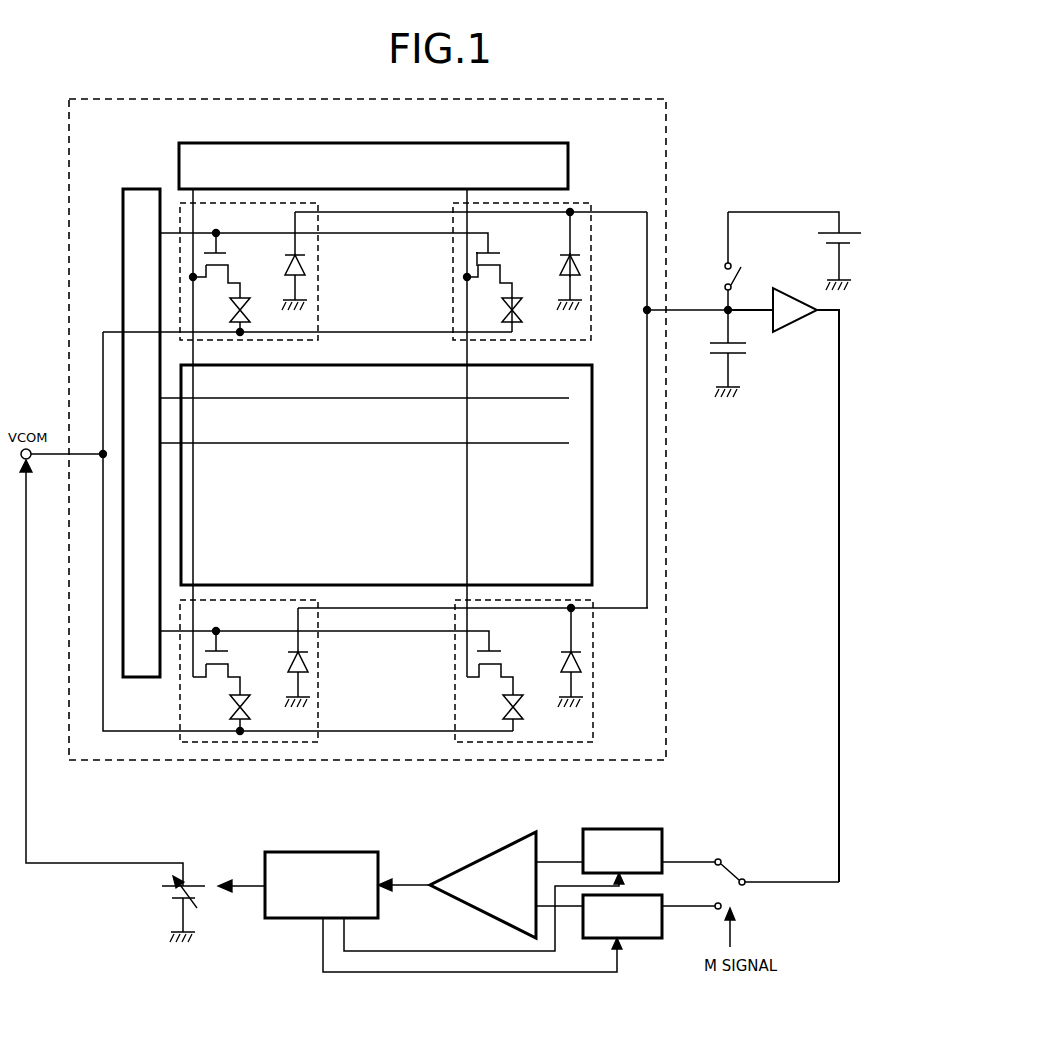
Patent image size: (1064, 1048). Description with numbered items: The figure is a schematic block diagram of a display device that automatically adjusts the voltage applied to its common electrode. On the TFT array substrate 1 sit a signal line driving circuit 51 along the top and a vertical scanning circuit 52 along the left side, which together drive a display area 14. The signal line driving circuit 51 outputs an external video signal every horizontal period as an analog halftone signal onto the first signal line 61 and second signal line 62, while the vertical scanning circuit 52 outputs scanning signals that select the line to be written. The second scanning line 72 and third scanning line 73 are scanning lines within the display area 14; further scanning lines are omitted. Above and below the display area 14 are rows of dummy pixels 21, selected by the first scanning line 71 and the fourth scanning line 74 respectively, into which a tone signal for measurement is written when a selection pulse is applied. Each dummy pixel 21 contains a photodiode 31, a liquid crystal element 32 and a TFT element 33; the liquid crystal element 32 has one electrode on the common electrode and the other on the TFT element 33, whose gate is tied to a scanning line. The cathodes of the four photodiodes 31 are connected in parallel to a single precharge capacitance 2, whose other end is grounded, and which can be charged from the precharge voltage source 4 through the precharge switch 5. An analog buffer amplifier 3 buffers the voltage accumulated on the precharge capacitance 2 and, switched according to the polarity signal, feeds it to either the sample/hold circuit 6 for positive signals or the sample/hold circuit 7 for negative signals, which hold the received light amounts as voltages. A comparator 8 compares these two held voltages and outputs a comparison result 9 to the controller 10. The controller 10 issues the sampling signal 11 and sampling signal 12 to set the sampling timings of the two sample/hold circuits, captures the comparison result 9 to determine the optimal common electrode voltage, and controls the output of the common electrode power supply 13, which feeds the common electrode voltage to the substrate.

The TFT array substrate 1 is at (666, 142).
The precharge capacitance (Cp) 2 is at (742, 348).
The analog buffer amplifier 3 is at (795, 300).
The precharge voltage source (Vprc) 4 is at (848, 232).
The precharge switch 5 is at (724, 268).
The sample/hold circuit for positive signal 6 is at (636, 829).
The sample/hold circuit for negative signal 7 is at (645, 938).
The comparator 8 is at (482, 850).
The comparison result 9 is at (418, 884).
The controller 10 is at (320, 852).
The sampling signal for positive signal 11 is at (398, 950).
The sampling signal for negative signal 12 is at (398, 972).
The common electrode power supply 13 is at (165, 895).
The display area 14 is at (592, 468).
The dummy pixels 21 is at (318, 292).
The photodiodes 31 is at (562, 258).
The liquid crystal element (Clcd) 32 is at (502, 310).
The TFT elements 33 is at (504, 266).
The signal line driving circuit 51 is at (278, 143).
The vertical scanning circuit 52 is at (123, 243).
The first signal line 61 is at (193, 537).
The second signal line 62 is at (467, 537).
The first scanning line 71 is at (240, 232).
The second scanning line 72 is at (240, 398).
The third scanning line 73 is at (240, 443).
The fourth scanning line 74 is at (240, 630).